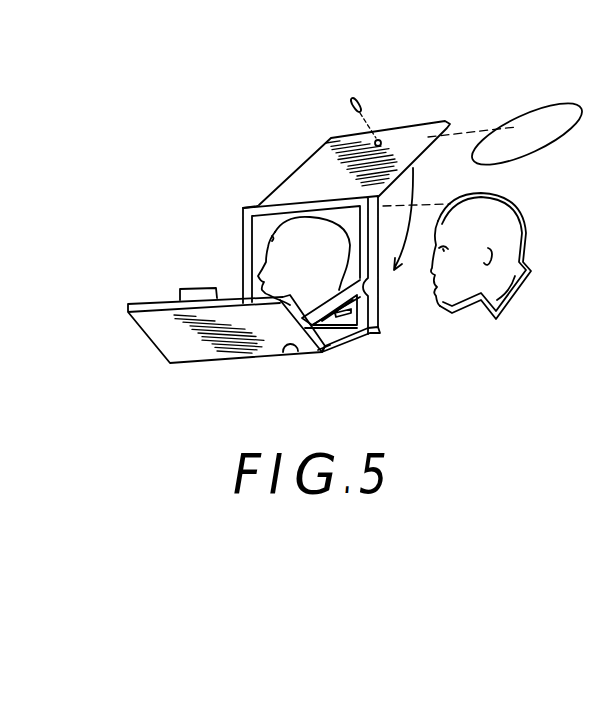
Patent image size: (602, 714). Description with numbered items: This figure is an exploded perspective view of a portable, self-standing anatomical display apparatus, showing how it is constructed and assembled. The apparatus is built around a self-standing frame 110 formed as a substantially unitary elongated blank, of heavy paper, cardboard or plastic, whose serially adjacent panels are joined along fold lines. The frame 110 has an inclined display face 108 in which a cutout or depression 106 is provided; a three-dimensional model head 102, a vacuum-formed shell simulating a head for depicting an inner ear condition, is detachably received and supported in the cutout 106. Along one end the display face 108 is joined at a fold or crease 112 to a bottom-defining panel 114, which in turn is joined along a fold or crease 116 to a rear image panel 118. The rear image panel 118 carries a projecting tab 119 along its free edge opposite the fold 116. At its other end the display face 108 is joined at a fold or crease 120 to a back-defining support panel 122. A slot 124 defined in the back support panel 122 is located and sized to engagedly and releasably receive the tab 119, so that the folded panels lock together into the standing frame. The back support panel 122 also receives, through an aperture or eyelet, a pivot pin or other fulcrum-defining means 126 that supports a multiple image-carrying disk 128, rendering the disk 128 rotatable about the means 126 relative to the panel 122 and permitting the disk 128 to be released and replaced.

The three-dimensional model head 102 is at (505, 242).
The cutout or depression 106 is at (262, 255).
The inclined display face 108 is at (246, 206).
The self-standing frame 110 is at (338, 364).
The fold or crease 112 is at (373, 330).
The bottom-defining panel 114 is at (365, 342).
The fold or crease 116 is at (290, 352).
The rear image panel 118 is at (167, 335).
The projecting tab 119 is at (180, 291).
The fold or crease 120 is at (383, 197).
The back-defining support panel 122 is at (402, 136).
The slot 124 is at (333, 188).
The fulcrum-defining means 126 is at (354, 98).
The multiple image-carrying disk 128 is at (514, 122).